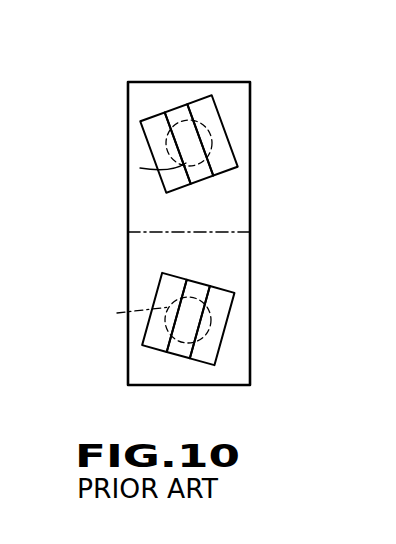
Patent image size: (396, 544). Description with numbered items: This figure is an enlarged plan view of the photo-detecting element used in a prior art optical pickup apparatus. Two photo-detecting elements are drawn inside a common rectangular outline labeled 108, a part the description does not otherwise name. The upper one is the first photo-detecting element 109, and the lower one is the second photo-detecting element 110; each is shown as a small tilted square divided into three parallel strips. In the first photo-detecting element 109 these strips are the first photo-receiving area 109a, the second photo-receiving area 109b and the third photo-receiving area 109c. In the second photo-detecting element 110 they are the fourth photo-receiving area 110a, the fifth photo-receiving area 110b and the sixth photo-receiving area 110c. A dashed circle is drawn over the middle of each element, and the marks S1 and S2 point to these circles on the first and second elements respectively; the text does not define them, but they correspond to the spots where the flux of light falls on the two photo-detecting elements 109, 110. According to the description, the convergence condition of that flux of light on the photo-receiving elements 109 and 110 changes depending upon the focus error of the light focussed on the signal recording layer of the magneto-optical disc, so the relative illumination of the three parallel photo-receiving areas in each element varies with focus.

The magnetic card 108 is at (251, 222).
The first photo-detecting element 109 is at (193, 105).
The first photo-receiving area 109a is at (150, 120).
The second photo-receiving area 109b is at (178, 112).
The third photo-receiving area 109c is at (207, 97).
The second photo-detecting element 110 is at (193, 342).
The fourth photo-receiving area 110a is at (158, 340).
The fifth photo-receiving area 110b is at (180, 350).
The sixth photo-receiving area 110c is at (208, 348).
The first sensing spot S1 is at (140, 168).
The second sensing spot S2 is at (117, 313).